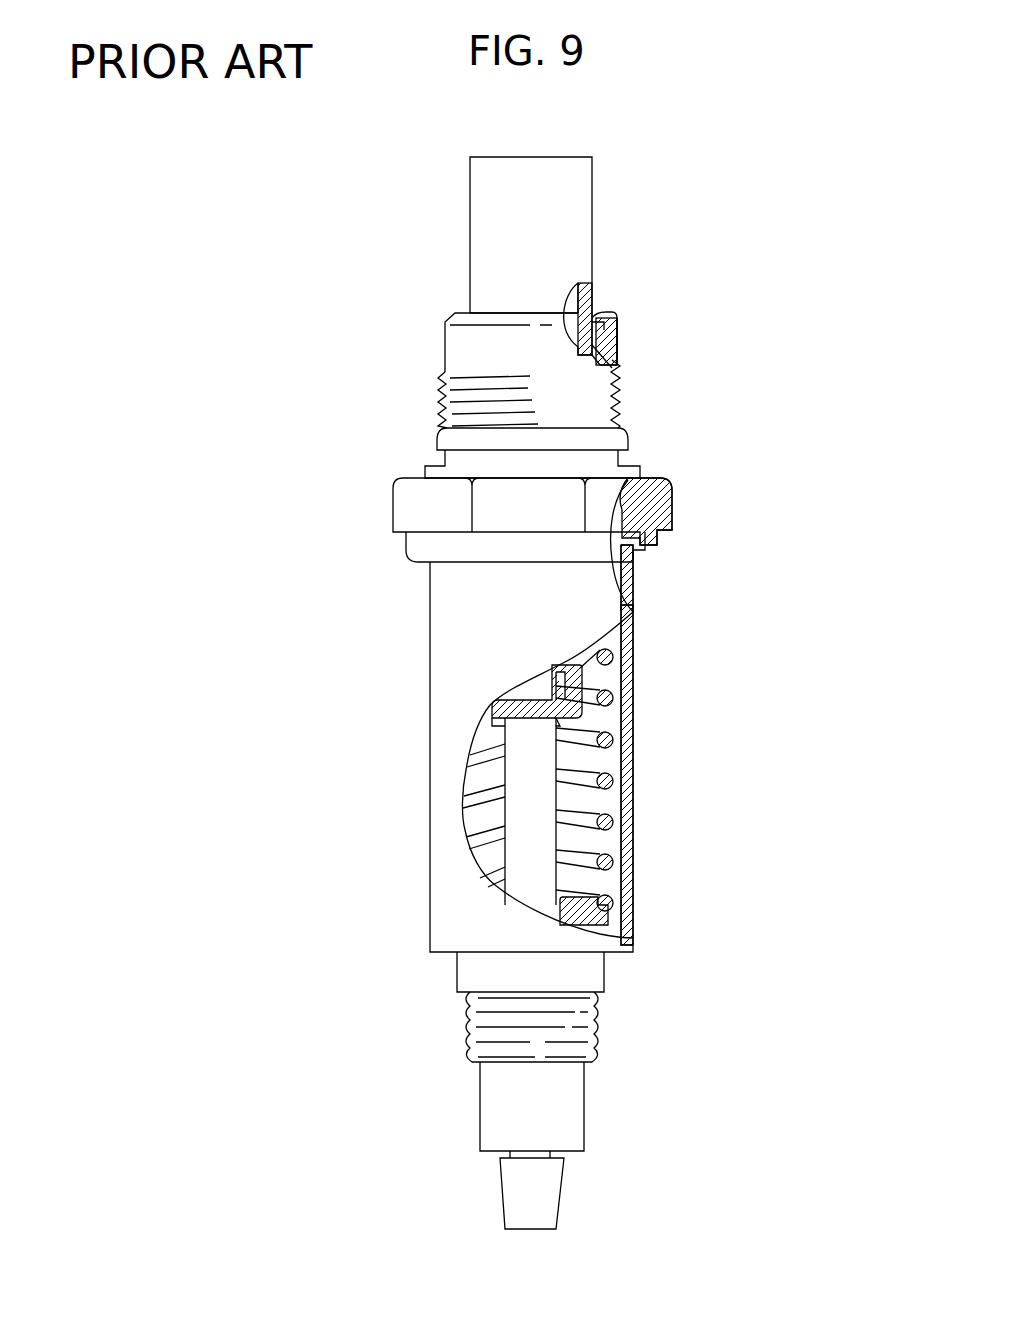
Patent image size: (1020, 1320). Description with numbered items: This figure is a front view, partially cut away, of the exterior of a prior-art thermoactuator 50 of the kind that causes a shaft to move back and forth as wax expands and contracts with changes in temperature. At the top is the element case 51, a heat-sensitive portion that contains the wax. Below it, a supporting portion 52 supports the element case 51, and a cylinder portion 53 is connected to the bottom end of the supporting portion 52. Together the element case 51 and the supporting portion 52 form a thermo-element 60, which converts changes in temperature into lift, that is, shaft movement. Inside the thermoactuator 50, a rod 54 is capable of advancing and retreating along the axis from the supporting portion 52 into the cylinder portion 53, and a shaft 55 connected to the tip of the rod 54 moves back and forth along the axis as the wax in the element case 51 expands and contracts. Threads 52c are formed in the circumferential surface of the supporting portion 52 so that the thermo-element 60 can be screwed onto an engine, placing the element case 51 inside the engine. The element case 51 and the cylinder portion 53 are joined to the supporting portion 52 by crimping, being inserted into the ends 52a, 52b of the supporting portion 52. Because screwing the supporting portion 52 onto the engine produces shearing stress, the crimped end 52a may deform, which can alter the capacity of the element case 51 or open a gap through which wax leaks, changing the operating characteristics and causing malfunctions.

The thermoactuator 50 is at (353, 142).
The element case 51 is at (572, 192).
The supporting portion 52 is at (342, 562).
The crimped end 52a is at (607, 312).
The crimped end 52b is at (645, 555).
The threads 52c is at (445, 348).
The cylinder portion 53 is at (385, 1165).
The rod 54 is at (530, 838).
The shaft 55 is at (540, 1200).
The thermo-element 60 is at (752, 548).